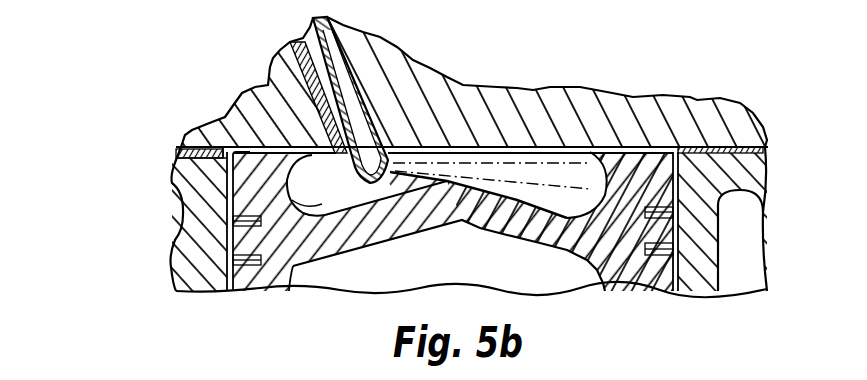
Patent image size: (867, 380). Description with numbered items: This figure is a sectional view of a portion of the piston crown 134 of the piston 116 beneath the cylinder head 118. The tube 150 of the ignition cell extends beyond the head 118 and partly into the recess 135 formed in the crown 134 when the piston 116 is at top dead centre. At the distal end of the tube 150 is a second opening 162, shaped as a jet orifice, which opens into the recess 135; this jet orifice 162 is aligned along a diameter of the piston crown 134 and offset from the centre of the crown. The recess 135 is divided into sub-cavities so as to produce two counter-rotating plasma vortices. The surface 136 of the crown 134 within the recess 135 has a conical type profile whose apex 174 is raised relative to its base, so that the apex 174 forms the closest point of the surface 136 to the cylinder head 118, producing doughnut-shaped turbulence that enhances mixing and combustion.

The head 118 is at (655, 115).
The tube 150 is at (310, 88).
The piston 116 is at (250, 281).
The piston crown 134 is at (287, 183).
The recess 135 is at (304, 188).
The apex 174 is at (420, 190).
The second opening 162 is at (407, 171).
The surface 136 is at (519, 200).